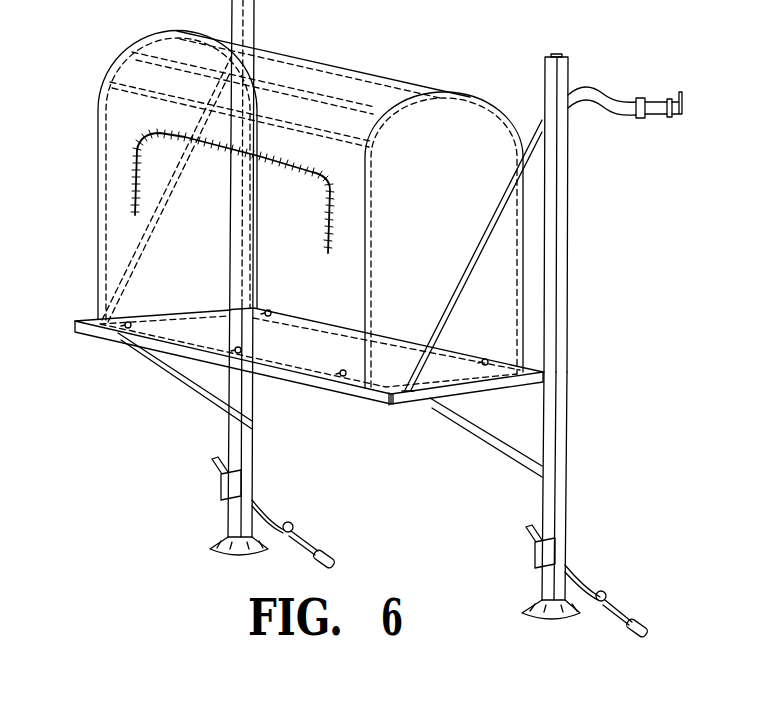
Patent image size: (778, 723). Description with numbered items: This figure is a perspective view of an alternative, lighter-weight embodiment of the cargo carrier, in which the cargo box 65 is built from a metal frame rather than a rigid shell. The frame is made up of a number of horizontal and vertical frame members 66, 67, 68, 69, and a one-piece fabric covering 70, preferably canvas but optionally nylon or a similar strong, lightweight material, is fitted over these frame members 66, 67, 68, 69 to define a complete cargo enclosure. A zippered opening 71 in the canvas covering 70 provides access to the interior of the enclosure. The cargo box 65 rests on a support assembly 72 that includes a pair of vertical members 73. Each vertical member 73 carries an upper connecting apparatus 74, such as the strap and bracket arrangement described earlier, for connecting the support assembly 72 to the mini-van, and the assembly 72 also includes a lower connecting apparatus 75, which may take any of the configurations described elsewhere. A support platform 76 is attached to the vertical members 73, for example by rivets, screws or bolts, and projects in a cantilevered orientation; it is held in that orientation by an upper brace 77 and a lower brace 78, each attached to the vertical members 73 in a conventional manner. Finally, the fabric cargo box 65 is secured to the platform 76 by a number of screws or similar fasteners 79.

The cargo box 65 is at (505, 109).
The frame member 66 is at (323, 132).
The frame member 67 is at (393, 340).
The frame member 68 is at (455, 378).
The frame member 69 is at (100, 84).
The fabric covering 70 is at (316, 313).
The zippered opening 71 is at (296, 170).
The support assembly 72 is at (570, 390).
The vertical members 73 is at (257, 22).
The upper connecting apparatus 74 is at (632, 95).
The lower connecting apparatus 75 is at (604, 580).
The support platform 76 is at (403, 396).
The upper brace 77 is at (135, 240).
The lower brace 78 is at (166, 372).
The fasteners 79 is at (132, 325).